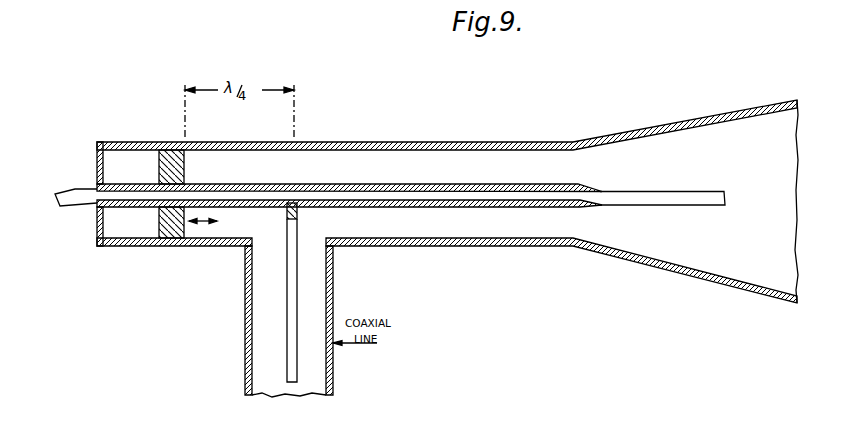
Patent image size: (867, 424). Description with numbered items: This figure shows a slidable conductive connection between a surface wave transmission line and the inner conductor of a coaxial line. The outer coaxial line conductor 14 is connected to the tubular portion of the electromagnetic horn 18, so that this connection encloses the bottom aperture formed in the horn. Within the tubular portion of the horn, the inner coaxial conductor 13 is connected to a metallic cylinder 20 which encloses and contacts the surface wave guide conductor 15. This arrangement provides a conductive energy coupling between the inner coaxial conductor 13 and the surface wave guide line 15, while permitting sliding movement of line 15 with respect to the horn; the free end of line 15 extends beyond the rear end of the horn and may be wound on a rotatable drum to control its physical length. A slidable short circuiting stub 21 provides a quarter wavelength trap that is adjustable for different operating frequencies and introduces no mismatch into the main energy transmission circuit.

The inner coaxial conductor 13 is at (287, 331).
The outer coaxial line conductor 14 is at (245, 307).
The surface wave guide conductor 15 is at (477, 197).
The electromagnetic horn 18 is at (466, 145).
The metallic cylinder 20 is at (402, 184).
The slidable short circuiting stub 21 is at (186, 168).